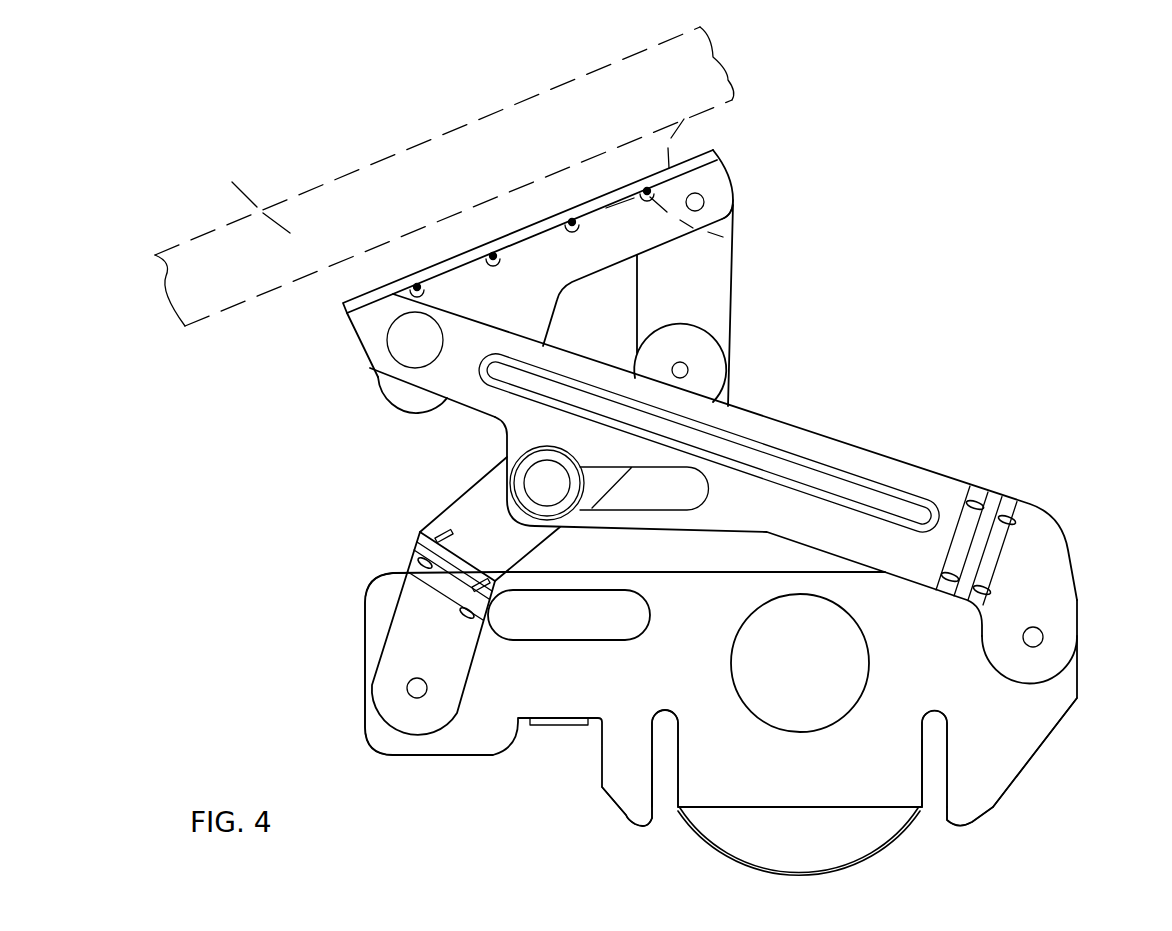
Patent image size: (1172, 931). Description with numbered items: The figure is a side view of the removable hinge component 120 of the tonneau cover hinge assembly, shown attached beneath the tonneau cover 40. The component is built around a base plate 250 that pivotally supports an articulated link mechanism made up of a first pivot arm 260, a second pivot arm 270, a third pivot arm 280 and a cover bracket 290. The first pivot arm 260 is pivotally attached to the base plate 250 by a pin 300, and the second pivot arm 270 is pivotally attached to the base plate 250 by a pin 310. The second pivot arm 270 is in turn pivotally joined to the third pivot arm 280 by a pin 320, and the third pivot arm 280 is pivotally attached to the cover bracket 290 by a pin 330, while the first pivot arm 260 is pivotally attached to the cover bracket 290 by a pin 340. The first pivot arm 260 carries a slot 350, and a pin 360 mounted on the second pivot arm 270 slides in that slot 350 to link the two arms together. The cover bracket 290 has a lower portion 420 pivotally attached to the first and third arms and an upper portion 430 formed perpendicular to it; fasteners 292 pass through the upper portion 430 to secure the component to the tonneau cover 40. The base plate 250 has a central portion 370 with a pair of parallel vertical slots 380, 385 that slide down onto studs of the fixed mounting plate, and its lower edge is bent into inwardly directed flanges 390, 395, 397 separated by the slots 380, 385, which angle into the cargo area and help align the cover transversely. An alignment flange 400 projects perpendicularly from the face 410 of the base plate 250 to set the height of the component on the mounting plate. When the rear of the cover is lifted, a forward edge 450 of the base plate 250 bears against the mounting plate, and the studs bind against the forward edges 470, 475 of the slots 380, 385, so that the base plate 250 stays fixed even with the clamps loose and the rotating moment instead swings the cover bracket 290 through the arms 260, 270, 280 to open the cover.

The tonneau cover 40 is at (224, 178).
The removable hinge component 120 is at (947, 320).
The base plate 250 is at (1047, 695).
The first pivot arm 260 is at (918, 482).
The second pivot arm 270 is at (465, 497).
The third pivot arm 280 is at (697, 273).
The cover bracket 290 is at (707, 180).
The fasteners 292 is at (745, 230).
The pin 300 is at (1035, 634).
The pin 310 is at (417, 688).
The pin 320 is at (683, 368).
The pin 330 is at (697, 202).
The pin 340 is at (415, 340).
The slot 350 is at (673, 488).
The pin 360 is at (545, 483).
The central portion 370 is at (912, 690).
The vertical slot 380 is at (662, 736).
The vertical slot 385 is at (933, 755).
The inwardly directed flange 390 is at (832, 858).
The inwardly directed flange 395 is at (632, 815).
The inwardly directed flange 397 is at (967, 815).
The alignment flange 400 is at (545, 723).
The face 410 is at (483, 712).
The lower portion 420 is at (620, 210).
The upper portion 430 is at (600, 203).
The forward edge 450 is at (365, 612).
The forward edge 470 is at (653, 777).
The forward edge 475 is at (923, 738).